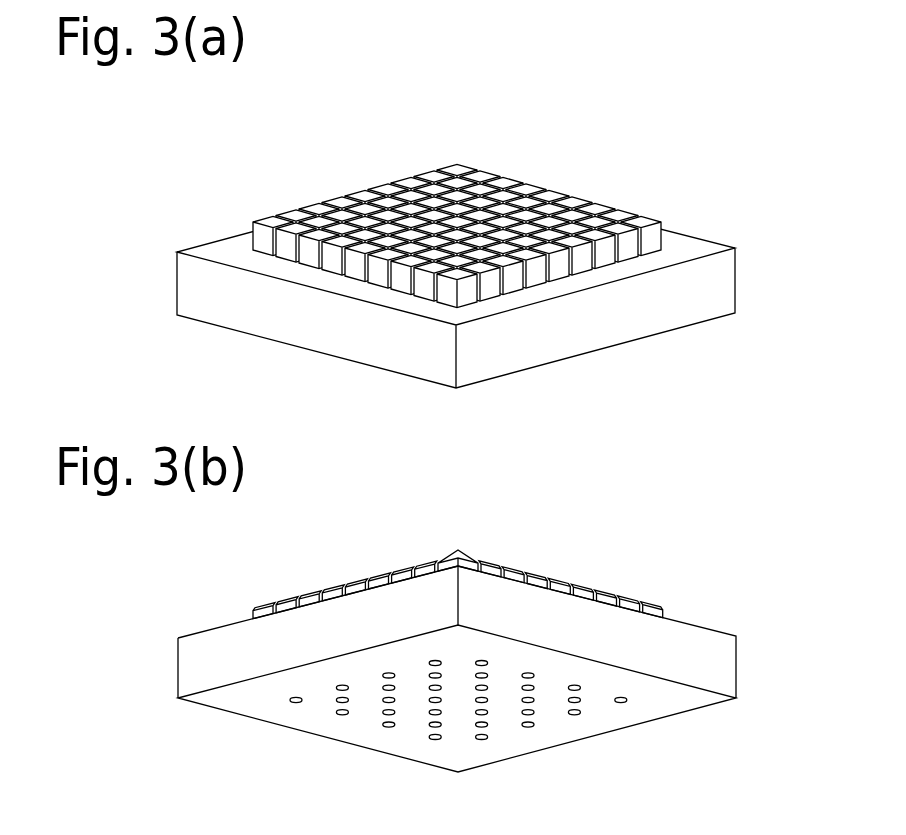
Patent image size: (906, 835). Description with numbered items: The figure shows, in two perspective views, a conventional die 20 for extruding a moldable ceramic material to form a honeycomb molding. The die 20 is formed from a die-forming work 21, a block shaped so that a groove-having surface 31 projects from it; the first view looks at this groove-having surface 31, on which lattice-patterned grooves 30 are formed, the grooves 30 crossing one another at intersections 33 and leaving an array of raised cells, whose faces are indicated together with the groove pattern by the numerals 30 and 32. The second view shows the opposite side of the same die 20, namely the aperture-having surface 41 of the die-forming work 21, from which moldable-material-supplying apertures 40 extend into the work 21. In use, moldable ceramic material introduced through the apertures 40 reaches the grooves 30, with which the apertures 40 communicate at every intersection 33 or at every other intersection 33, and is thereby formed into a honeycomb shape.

In FIG. 3A, the die 20 is at (222, 165).
In FIG. 3B, the die 20 is at (222, 593).
In FIG. 3A, the die-forming work 21 is at (725, 275).
In FIG. 3B, the die-forming work 21 is at (723, 668).
In FIG. 3A, the lattice-patterned grooves 30 is at (410, 178).
In FIG. 3A, the groove-having surface 31 is at (546, 195).
In FIG. 3B, the groove-having surface 31 is at (577, 585).
In FIG. 3A, the pillar side surface 32 is at (330, 197).
In FIG. 3A, the intersections of the grooves 33 is at (615, 219).
In FIG. 3B, the moldable-material-supplying apertures 40 is at (528, 724).
In FIG. 3B, the aperture-having surface 41 is at (643, 710).